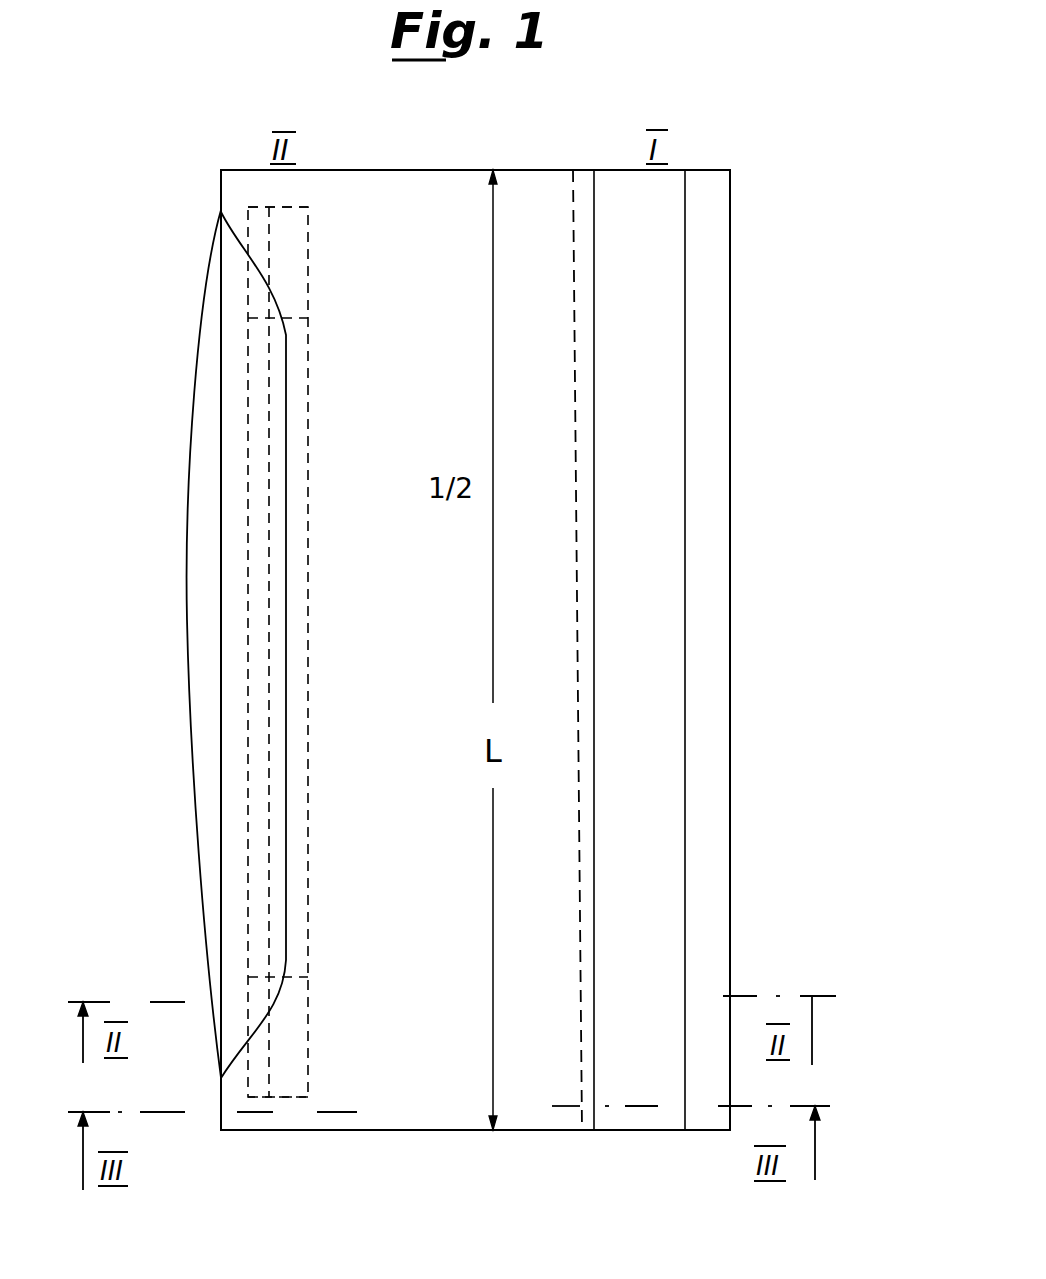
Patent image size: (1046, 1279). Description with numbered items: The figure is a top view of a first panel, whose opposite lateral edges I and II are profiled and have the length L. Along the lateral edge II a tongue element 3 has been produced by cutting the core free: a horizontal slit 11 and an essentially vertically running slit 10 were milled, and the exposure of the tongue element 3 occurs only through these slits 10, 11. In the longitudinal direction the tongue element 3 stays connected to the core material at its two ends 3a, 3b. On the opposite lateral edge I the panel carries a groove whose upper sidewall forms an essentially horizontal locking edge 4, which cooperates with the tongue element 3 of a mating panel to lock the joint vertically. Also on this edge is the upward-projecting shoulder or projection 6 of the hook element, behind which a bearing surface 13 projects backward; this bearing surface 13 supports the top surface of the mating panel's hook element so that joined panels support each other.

The tongue element 3 is at (203, 623).
The end of tongue element 3a is at (290, 202).
The end of tongue element 3b is at (302, 1102).
The locking edge 4 is at (583, 787).
The shoulder 6 is at (717, 531).
The slit 10 is at (298, 828).
The horizontal slit 11 is at (245, 771).
The bearing surface 13 is at (642, 606).